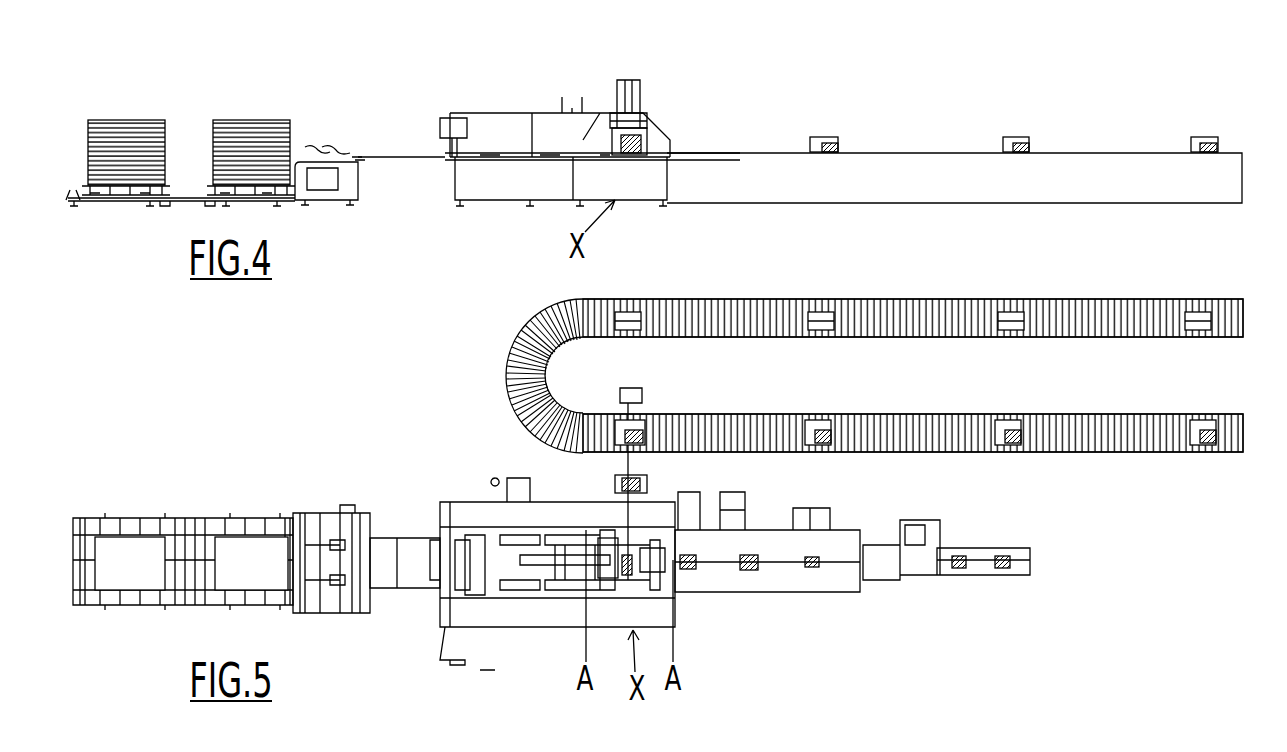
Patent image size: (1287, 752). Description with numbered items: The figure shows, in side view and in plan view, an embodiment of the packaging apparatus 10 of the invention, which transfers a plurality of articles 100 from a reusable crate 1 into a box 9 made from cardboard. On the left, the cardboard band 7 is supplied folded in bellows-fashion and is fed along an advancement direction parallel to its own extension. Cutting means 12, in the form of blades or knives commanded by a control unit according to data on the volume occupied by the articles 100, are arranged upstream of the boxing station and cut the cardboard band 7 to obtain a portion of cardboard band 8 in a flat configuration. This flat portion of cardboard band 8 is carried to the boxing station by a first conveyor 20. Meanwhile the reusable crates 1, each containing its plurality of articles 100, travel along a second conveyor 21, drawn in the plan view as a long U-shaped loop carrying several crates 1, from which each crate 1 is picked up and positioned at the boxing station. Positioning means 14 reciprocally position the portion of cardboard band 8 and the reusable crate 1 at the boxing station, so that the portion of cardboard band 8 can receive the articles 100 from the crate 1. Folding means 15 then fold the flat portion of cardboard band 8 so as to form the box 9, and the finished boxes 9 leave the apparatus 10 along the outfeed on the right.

In FIG. 4, the reusable crate 1 is at (650, 136).
In FIG. 5, the reusable crate 1 is at (635, 312).
In FIG. 4, the cardboard band 7 is at (146, 108).
In FIG. 5, the cardboard band 7 is at (255, 558).
In FIG. 5, the portion of cardboard band 8 is at (618, 542).
In FIG. 5, the box 9 is at (810, 570).
In FIG. 4, the apparatus 10 is at (1146, 75).
In FIG. 5, the apparatus 10 is at (1100, 592).
In FIG. 4, the cutting means 12 is at (337, 139).
In FIG. 5, the cutting means 12 is at (353, 499).
In FIG. 4, the positioning means 14 is at (652, 76).
In FIG. 5, the positioning means 14 is at (650, 484).
In FIG. 5, the folding means 15 is at (622, 578).
In FIG. 4, the first conveyor 20 is at (407, 155).
In FIG. 5, the first conveyor 20 is at (412, 560).
In FIG. 4, the second conveyor 21 is at (913, 160).
In FIG. 5, the second conveyor 21 is at (962, 458).
In FIG. 4, the articles 100 is at (650, 150).
In FIG. 5, the articles 100 is at (836, 447).